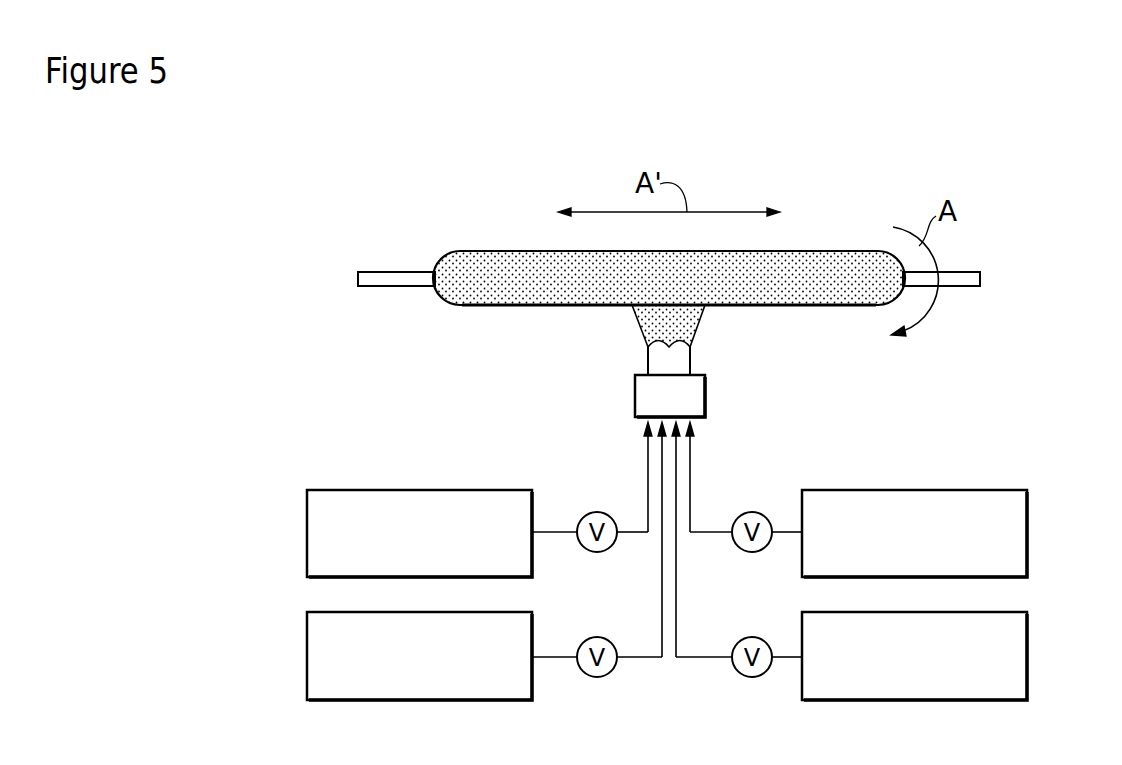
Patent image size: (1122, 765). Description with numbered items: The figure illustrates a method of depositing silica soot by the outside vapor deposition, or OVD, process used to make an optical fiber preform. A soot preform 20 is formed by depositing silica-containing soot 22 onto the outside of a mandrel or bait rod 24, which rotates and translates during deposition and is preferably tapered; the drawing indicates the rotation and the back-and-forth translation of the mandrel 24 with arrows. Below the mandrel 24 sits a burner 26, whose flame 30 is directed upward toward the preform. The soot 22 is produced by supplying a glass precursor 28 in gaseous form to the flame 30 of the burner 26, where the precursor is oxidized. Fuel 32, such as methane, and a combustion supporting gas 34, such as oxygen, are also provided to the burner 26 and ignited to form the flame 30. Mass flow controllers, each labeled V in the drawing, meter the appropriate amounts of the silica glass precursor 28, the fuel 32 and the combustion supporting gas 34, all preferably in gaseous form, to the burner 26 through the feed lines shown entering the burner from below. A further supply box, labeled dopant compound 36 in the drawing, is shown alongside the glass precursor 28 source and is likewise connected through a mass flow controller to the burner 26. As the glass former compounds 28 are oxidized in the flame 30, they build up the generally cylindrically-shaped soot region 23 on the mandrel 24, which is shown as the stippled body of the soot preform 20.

The soot preform 20 is at (816, 238).
The silica-containing soot 22 is at (701, 320).
The soot region 23 is at (487, 251).
The mandrel 24 is at (396, 272).
The burner 26 is at (705, 397).
The glass precursor 28 is at (1000, 490).
The flame 30 is at (645, 362).
The fuel 32 is at (325, 490).
The combustion supporting gas 34 is at (325, 612).
The dopant compound source 36 is at (1000, 612).